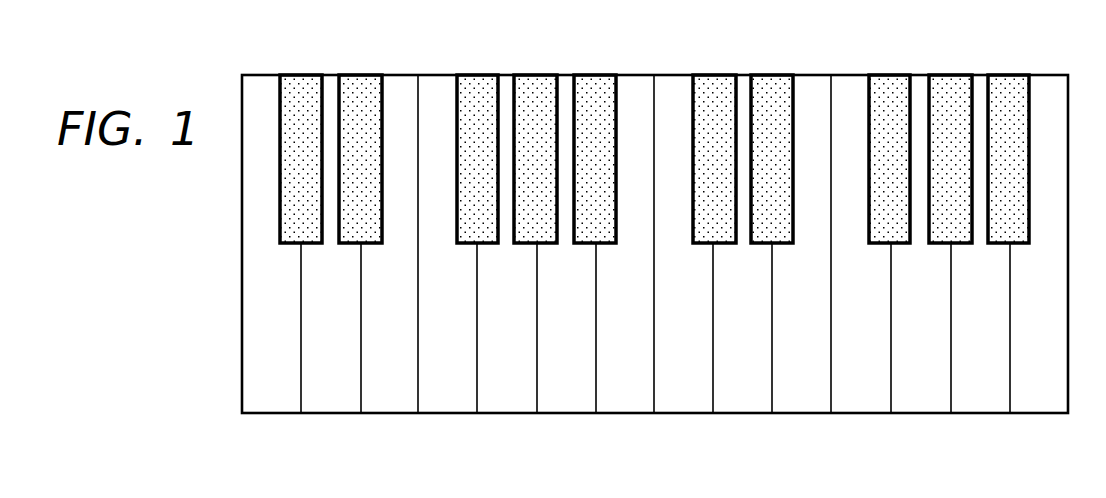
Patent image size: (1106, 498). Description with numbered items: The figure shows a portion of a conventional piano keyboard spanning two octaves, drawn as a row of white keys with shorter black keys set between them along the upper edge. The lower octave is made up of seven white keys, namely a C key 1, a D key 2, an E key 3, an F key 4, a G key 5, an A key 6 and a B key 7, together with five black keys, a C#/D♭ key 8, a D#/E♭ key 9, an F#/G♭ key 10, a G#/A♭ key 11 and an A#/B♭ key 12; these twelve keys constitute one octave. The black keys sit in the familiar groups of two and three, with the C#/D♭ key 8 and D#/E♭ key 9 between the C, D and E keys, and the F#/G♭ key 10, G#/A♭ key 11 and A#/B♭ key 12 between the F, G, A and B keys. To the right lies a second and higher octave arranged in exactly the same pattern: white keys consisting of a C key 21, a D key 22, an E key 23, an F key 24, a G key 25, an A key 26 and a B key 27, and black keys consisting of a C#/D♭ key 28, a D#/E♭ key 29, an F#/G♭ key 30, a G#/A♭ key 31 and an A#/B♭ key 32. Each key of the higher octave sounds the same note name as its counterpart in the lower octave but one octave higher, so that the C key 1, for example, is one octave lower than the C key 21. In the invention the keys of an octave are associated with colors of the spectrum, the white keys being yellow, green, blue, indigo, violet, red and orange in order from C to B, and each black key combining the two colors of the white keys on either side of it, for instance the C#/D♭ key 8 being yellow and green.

The C key 1 is at (275, 402).
The D key 2 is at (342, 402).
The E key 3 is at (393, 402).
The F key 4 is at (458, 402).
The G key 5 is at (511, 402).
The A key 6 is at (576, 402).
The B key 7 is at (635, 402).
The C#/D♭ key 8 is at (300, 75).
The D#/E♭ key 9 is at (360, 75).
The F#/G♭ key 10 is at (478, 75).
The G#/A♭ key 11 is at (528, 75).
The A#/B♭ key 12 is at (595, 75).
The C key 21 is at (681, 399).
The D key 22 is at (733, 393).
The E key 23 is at (806, 400).
The F key 24 is at (851, 400).
The G key 25 is at (923, 400).
The A key 26 is at (968, 392).
The B key 27 is at (1035, 399).
The C#/D♭ key 28 is at (713, 75).
The D#/E♭ key 29 is at (773, 75).
The F#/G♭ key 30 is at (890, 75).
The G#/A♭ key 31 is at (950, 75).
The A#/B♭ key 32 is at (1010, 75).